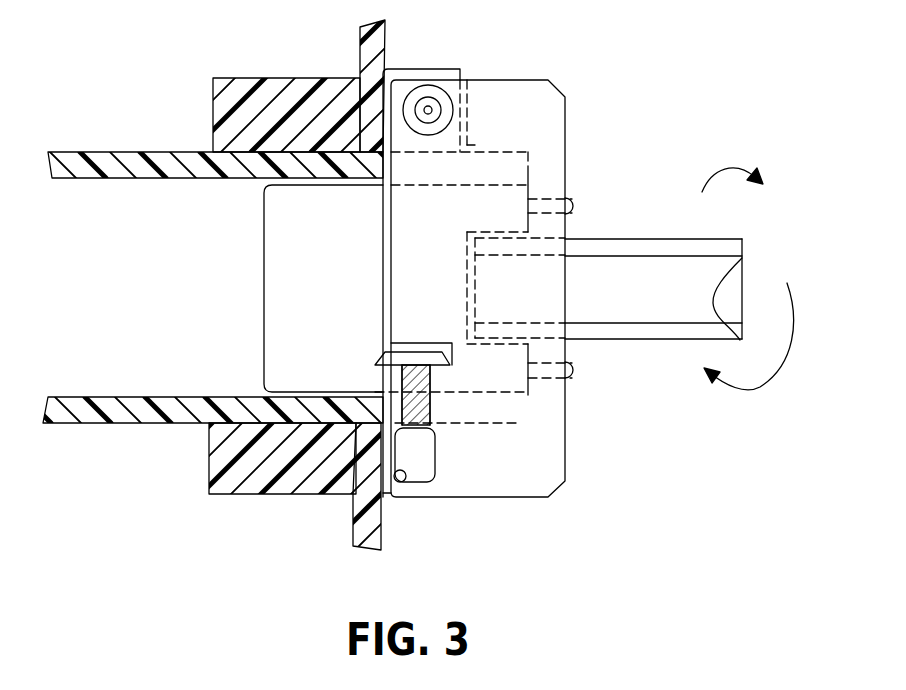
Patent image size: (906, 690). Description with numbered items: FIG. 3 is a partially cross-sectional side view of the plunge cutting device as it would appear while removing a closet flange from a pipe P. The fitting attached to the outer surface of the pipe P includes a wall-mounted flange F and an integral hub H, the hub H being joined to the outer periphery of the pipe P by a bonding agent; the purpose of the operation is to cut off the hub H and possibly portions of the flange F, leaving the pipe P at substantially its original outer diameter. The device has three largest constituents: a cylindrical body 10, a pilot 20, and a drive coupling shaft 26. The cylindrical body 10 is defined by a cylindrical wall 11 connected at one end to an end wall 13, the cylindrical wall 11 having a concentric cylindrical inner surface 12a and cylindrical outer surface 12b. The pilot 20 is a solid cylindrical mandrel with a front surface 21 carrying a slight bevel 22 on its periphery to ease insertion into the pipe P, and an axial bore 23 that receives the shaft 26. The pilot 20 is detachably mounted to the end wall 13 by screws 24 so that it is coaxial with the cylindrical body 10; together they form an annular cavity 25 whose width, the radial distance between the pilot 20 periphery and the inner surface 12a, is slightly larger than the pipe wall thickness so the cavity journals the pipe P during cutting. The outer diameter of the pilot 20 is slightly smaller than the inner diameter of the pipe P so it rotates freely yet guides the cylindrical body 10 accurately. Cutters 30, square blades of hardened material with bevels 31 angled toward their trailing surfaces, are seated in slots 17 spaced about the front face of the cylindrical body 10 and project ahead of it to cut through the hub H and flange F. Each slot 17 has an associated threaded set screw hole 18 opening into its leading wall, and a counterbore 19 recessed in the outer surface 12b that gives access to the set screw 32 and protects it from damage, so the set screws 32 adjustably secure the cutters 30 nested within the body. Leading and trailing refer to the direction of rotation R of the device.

The cylindrical body 10 is at (543, 60).
The cylindrical wall 11 is at (520, 466).
The cylindrical inner surface 12a is at (522, 423).
The cylindrical outer surface 12b is at (500, 498).
The end wall 13 is at (532, 157).
The slots 17 is at (470, 143).
The threaded set screw hole 18 is at (427, 107).
The counterbore 19 is at (460, 106).
The pilot 20 is at (290, 297).
The front surface 21 is at (264, 346).
The bevel 22 is at (264, 184).
The axial bore 23 is at (505, 233).
The screws 24 is at (566, 199).
The annular cavity 25 is at (518, 152).
The drive coupling shaft 26 is at (680, 239).
The cutters 30 is at (444, 69).
The bevels 31 is at (447, 366).
The set screws 32 is at (440, 426).
The flange F is at (362, 62).
The pipe P is at (174, 167).
The hub H is at (245, 497).
The direction of rotation R is at (748, 295).